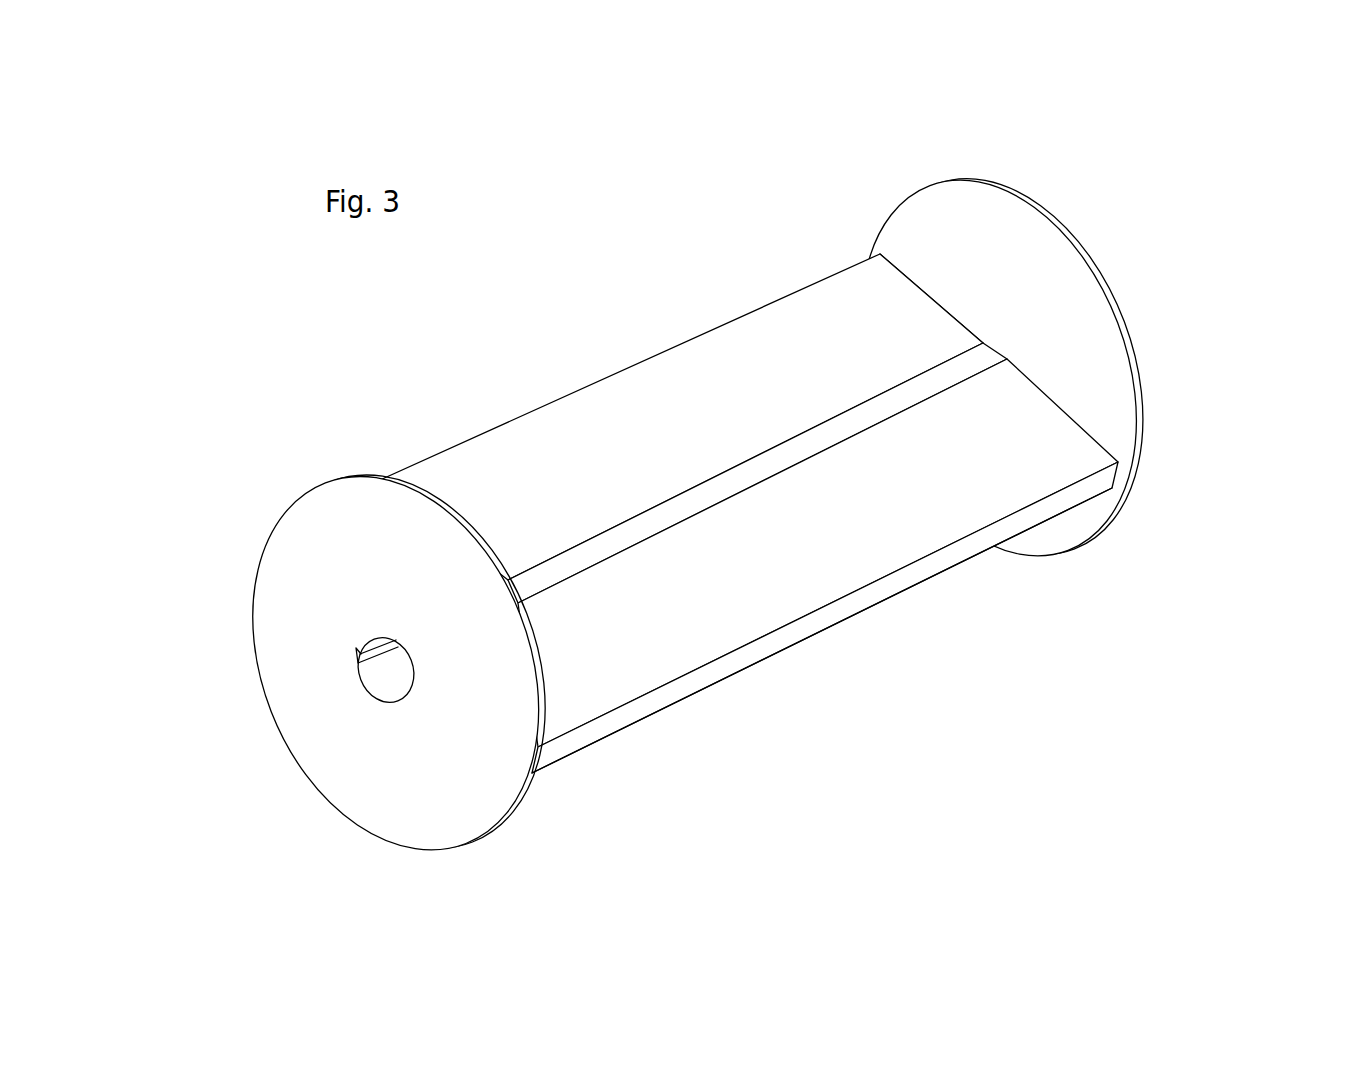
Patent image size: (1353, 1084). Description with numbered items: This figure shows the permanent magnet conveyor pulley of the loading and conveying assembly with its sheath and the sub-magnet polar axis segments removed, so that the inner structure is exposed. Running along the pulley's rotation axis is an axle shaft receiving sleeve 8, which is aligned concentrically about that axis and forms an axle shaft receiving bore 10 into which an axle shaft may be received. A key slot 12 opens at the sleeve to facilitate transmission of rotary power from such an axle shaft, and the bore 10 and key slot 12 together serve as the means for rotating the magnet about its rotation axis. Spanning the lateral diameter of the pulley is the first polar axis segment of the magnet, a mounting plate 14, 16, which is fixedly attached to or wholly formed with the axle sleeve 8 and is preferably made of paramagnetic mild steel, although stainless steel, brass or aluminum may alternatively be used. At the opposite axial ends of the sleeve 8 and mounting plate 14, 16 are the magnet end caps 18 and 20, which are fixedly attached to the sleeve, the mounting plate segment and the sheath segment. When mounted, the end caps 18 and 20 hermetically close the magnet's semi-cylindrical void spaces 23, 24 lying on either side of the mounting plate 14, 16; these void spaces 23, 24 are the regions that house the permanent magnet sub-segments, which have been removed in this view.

The axle shaft receiving sleeve 8 is at (627, 532).
The axle shaft receiving bore 10 is at (383, 687).
The key slot 12 is at (357, 657).
The mounting plate 14 is at (769, 353).
The mounting plate 16 is at (912, 580).
The magnet end cap 18 is at (533, 670).
The magnet end cap 20 is at (1123, 310).
The semi-cylindrical void space 23 is at (955, 263).
The semi-cylindrical void space 24 is at (785, 658).